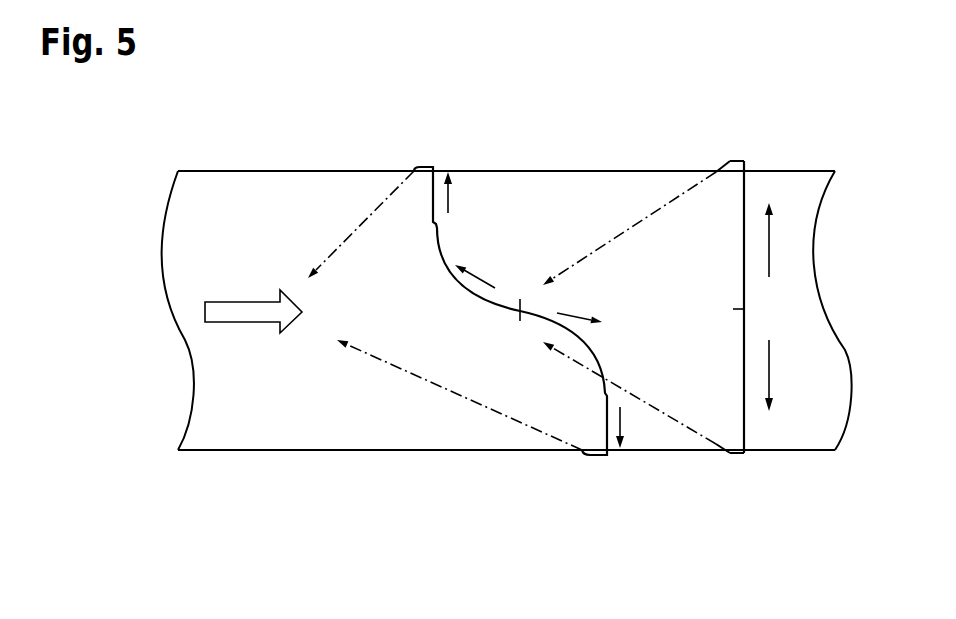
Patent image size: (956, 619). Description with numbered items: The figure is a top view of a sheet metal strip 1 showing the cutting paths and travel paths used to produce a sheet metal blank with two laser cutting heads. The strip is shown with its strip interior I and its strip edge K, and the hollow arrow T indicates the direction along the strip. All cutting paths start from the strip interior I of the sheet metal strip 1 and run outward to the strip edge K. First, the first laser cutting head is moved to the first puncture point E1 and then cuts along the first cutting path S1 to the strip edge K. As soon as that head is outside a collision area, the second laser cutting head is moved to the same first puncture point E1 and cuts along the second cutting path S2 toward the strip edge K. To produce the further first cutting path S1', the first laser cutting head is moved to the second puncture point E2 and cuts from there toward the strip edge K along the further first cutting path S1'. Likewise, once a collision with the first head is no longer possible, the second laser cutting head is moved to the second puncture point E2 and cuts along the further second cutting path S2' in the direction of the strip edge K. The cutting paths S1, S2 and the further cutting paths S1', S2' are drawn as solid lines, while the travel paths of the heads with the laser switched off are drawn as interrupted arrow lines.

The sheet metal strip 1 is at (805, 186).
The strip edge K is at (805, 451).
The transport direction T is at (237, 313).
The strip interior I is at (407, 283).
The first puncture point E1 is at (810, 285).
The second puncture point E2 is at (510, 311).
The first cutting path S1 is at (728, 240).
The second cutting path S2 is at (728, 375).
The further first cutting path S1' is at (483, 230).
The further second cutting path S2' is at (614, 380).